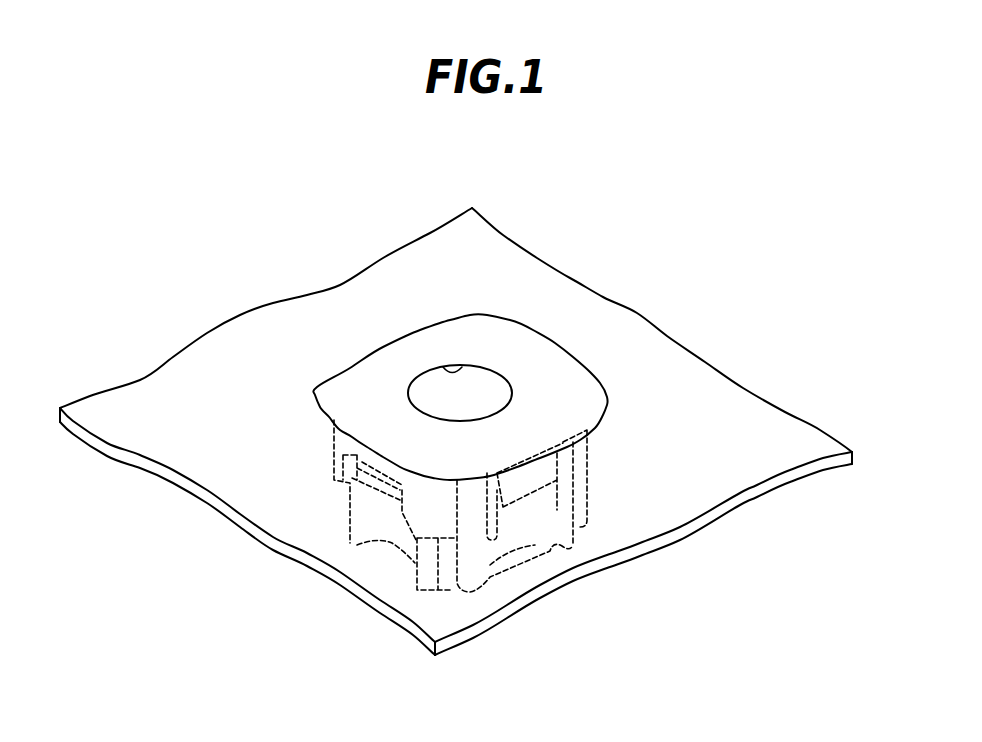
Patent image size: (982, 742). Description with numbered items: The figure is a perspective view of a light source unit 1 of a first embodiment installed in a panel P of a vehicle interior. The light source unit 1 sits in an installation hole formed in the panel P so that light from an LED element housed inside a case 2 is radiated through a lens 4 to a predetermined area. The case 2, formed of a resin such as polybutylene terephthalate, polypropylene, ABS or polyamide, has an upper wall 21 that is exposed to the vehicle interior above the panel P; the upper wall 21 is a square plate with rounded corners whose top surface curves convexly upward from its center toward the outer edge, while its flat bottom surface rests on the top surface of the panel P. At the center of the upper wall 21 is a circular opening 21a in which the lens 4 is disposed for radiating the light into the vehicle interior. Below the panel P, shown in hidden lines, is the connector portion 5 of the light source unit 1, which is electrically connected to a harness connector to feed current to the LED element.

The light source unit 1 is at (558, 330).
The case 2 is at (592, 385).
The upper wall 21 is at (495, 330).
The opening 21a is at (443, 367).
The lens 4 is at (425, 397).
The connector portion 5 is at (357, 543).
The panel P is at (680, 517).